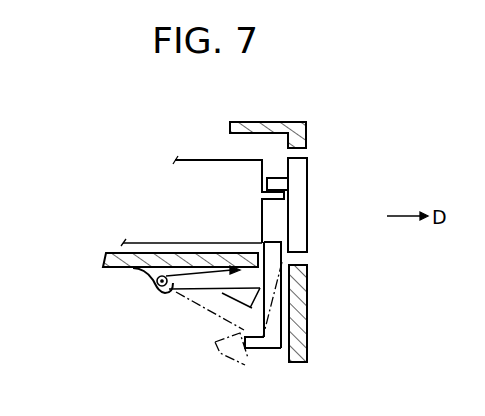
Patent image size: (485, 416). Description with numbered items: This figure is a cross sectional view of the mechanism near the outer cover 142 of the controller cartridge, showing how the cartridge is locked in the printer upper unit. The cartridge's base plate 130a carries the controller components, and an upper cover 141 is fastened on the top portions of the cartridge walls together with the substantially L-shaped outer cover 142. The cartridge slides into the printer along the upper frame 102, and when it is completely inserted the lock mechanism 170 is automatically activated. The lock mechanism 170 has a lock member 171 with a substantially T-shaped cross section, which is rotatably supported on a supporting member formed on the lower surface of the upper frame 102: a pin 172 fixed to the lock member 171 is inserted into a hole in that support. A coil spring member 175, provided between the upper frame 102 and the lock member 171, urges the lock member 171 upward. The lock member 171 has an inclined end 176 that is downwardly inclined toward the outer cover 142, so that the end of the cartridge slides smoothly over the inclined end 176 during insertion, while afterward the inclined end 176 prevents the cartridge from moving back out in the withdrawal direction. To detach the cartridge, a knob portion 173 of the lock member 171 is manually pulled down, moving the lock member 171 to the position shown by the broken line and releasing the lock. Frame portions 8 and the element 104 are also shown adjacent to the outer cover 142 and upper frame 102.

The frame member 8 is at (306, 128).
The upper frame 102 is at (110, 268).
The bracket 104 is at (134, 283).
The base plate 130a is at (183, 243).
The upper cover 141 is at (215, 161).
The outer cover 142 is at (307, 217).
The lock mechanism 170 is at (197, 303).
The lock member 171 is at (278, 350).
The pin 172 is at (162, 294).
The knob portion 173 is at (263, 350).
The coil spring member 175 is at (227, 273).
The inclined end 176 is at (270, 241).